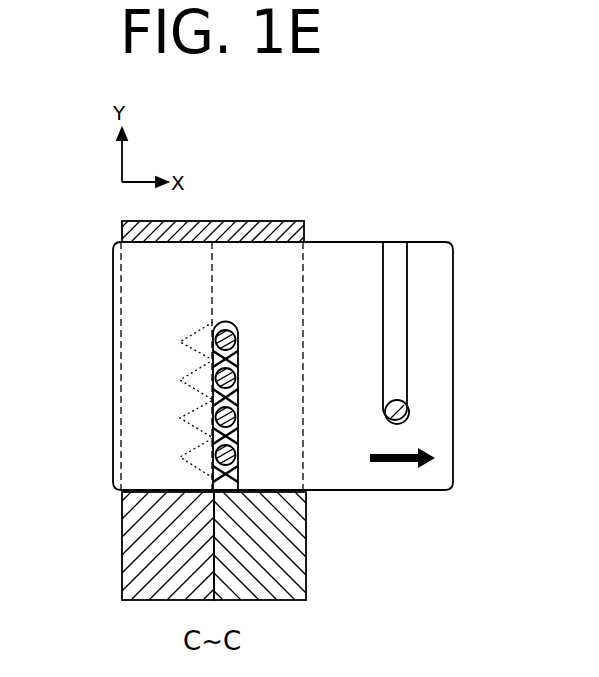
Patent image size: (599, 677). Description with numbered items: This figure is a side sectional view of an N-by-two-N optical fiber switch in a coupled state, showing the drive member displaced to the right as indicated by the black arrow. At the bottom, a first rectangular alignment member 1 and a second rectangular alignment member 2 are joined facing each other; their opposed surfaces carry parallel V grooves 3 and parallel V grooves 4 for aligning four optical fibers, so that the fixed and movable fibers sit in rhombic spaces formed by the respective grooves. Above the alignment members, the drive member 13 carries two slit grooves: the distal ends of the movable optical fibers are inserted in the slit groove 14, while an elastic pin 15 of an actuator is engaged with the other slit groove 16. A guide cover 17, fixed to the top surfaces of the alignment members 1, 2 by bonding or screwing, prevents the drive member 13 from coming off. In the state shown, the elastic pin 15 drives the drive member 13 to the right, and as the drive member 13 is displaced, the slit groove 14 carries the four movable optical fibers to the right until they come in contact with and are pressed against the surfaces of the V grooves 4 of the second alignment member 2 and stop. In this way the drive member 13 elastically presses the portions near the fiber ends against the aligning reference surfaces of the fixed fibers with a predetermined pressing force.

The first rectangular alignment member 1 is at (140, 553).
The second rectangular alignment member 2 is at (290, 553).
The parallel V grooves 3 is at (196, 376).
The parallel V grooves 4 is at (225, 357).
The drive member 13 is at (357, 265).
The slit groove 14 is at (232, 478).
The elastic pin 15 is at (409, 410).
The slit groove 16 is at (397, 290).
The guide cover 17 is at (256, 221).